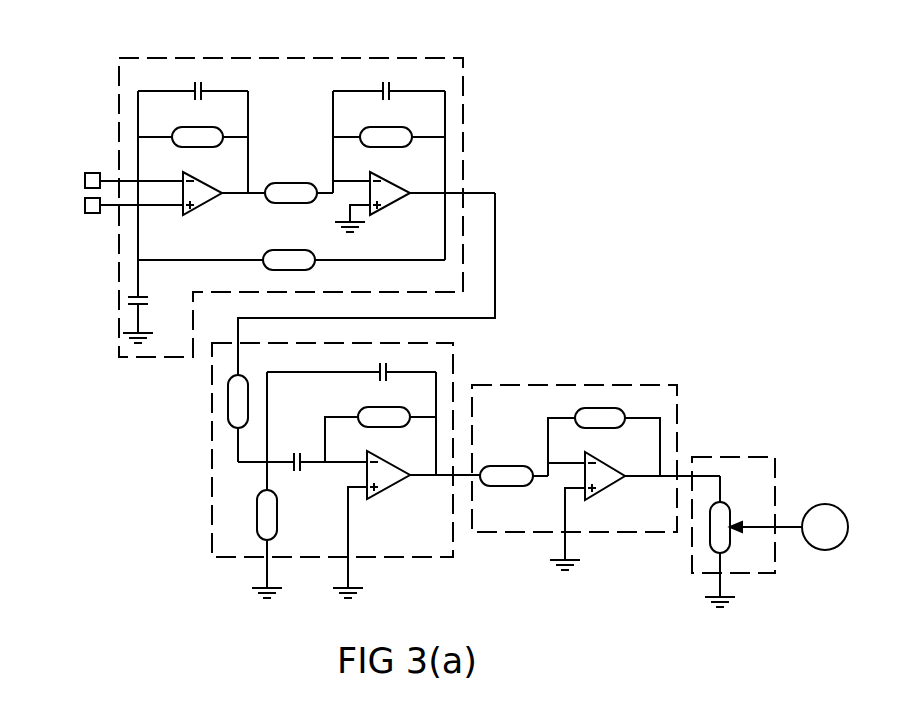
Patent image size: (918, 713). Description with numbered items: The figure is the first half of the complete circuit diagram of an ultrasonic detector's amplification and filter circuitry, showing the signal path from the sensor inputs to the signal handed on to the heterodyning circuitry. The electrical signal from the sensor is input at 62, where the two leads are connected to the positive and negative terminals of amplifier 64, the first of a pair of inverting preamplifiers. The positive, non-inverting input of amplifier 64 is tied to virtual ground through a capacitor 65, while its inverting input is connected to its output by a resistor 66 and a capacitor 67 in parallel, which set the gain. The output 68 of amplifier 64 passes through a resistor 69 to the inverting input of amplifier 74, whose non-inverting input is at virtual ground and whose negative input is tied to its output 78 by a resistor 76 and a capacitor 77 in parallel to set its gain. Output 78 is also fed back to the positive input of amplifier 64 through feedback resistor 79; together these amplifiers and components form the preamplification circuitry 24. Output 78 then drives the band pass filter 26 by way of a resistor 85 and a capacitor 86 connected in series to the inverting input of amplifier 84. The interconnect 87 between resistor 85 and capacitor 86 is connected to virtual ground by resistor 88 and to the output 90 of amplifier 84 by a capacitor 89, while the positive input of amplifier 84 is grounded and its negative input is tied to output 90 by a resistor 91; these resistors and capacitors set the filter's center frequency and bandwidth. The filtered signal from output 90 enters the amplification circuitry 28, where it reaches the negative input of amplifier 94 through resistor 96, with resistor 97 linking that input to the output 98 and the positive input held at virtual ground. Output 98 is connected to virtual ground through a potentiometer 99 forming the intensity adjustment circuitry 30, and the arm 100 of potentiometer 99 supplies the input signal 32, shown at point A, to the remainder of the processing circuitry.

The preamplification circuitry 24 is at (313, 63).
The input 62 is at (88, 165).
The inverting preamplifier 64 is at (206, 208).
The capacitor 65 is at (145, 302).
The resistor 66 is at (190, 126).
The capacitor 67 is at (198, 85).
The output 68 is at (222, 194).
The resistor 69 is at (292, 185).
The inverting preamplifier 74 is at (388, 210).
The resistor 76 is at (390, 148).
The capacitor 77 is at (388, 85).
The output 78 is at (410, 194).
The feedback resistor 79 is at (270, 270).
The band pass filter 26 is at (224, 487).
The resistor 85 is at (247, 385).
The capacitor 86 is at (297, 470).
The interconnect 87 is at (268, 462).
The resistor 88 is at (262, 528).
The capacitor 89 is at (383, 370).
The resistor 91 is at (382, 410).
The amplifier 84 is at (392, 485).
The output 90 is at (411, 477).
The amplification circuitry 28 is at (535, 540).
The resistor 96 is at (488, 487).
The resistor 97 is at (592, 410).
The amplifier 94 is at (605, 485).
The output 98 is at (625, 478).
The intensity adjustment circuitry 30 is at (694, 547).
The potentiometer 99 is at (731, 517).
The arm 100 is at (736, 532).
The input signal 32 is at (782, 528).